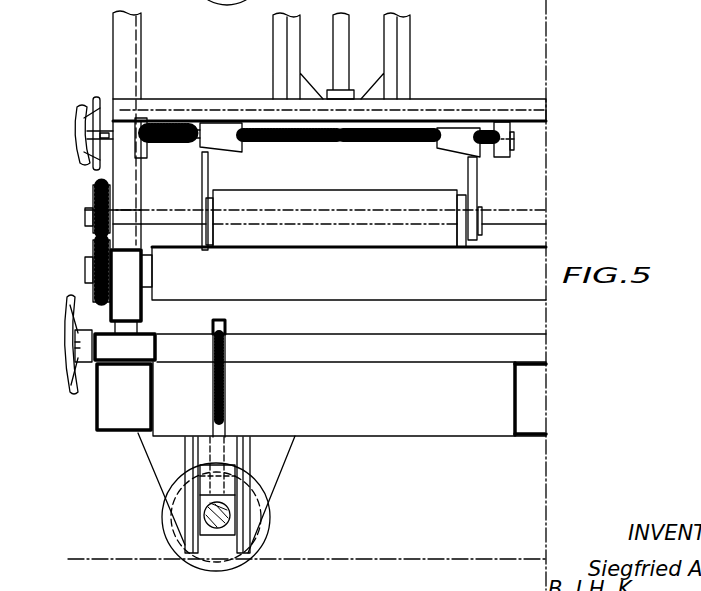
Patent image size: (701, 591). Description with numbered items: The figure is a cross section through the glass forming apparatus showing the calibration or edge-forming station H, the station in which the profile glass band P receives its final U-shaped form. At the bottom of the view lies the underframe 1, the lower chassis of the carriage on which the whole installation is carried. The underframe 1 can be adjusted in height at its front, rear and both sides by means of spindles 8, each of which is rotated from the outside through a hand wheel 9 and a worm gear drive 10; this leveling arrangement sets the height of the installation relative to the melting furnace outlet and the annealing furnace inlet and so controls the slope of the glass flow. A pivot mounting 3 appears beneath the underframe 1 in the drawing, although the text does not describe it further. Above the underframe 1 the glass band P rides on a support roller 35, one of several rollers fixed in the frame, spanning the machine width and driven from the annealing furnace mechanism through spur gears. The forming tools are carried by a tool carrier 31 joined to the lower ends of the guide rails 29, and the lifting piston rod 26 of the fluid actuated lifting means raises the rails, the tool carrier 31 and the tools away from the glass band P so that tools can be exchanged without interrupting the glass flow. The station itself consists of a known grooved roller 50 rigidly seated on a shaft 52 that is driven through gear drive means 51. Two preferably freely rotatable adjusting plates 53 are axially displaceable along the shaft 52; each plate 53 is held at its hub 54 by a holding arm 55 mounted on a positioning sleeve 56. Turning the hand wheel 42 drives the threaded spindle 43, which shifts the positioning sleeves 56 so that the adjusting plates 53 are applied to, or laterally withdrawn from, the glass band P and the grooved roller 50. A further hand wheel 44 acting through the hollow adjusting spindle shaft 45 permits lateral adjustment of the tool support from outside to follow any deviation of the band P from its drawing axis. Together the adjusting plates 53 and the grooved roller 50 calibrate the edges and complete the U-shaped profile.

The underframe 1 is at (374, 430).
The pivot pin 3 is at (268, 517).
The spindle 8 is at (228, 378).
The hand wheel 9 is at (67, 388).
The worm gear drive 10 is at (212, 352).
The lifting piston rod 26 is at (342, 51).
The guide rail 29 is at (278, 51).
The tool carrier 31 is at (186, 99).
The support roller 35 is at (313, 294).
The hand wheel 42 is at (80, 108).
The threaded spindle 43 is at (278, 143).
The hand wheel 44 is at (96, 166).
The adjusting spindle shaft 45 is at (163, 143).
The grooved roller 50 is at (362, 203).
The gear drive means 51 is at (95, 248).
The shaft 52 is at (540, 222).
The adjusting plate 53 is at (215, 196).
The hub 54 is at (481, 238).
The holding arm 55 is at (479, 177).
The positioning sleeve 56 is at (462, 137).
The calibration or edge-forming station H is at (74, 272).
The glass band P is at (322, 247).